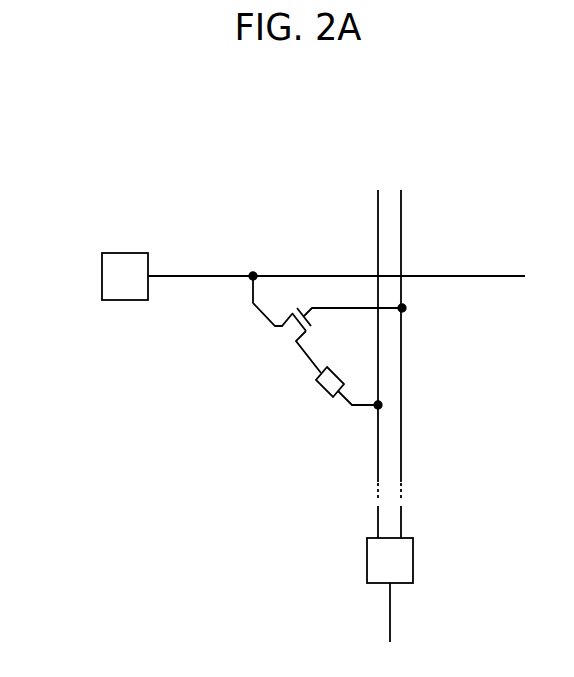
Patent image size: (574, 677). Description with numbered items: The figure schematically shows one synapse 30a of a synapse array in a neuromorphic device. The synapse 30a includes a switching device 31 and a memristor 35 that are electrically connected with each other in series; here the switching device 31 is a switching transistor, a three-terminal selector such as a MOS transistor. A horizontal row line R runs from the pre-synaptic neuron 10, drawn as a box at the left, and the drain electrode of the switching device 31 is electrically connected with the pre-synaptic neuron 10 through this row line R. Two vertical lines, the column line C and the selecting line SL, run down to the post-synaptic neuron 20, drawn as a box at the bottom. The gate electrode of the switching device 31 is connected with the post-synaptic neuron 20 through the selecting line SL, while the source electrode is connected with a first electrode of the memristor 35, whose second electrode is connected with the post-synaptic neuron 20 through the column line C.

The pre-synaptic neuron 10 is at (102, 268).
The post-synaptic neuron 20 is at (413, 543).
The synapse 30a is at (289, 358).
The switching device 31 is at (279, 340).
The memristor 35 is at (318, 393).
The column line C is at (377, 228).
The selecting line SL is at (403, 228).
The row line R is at (487, 274).